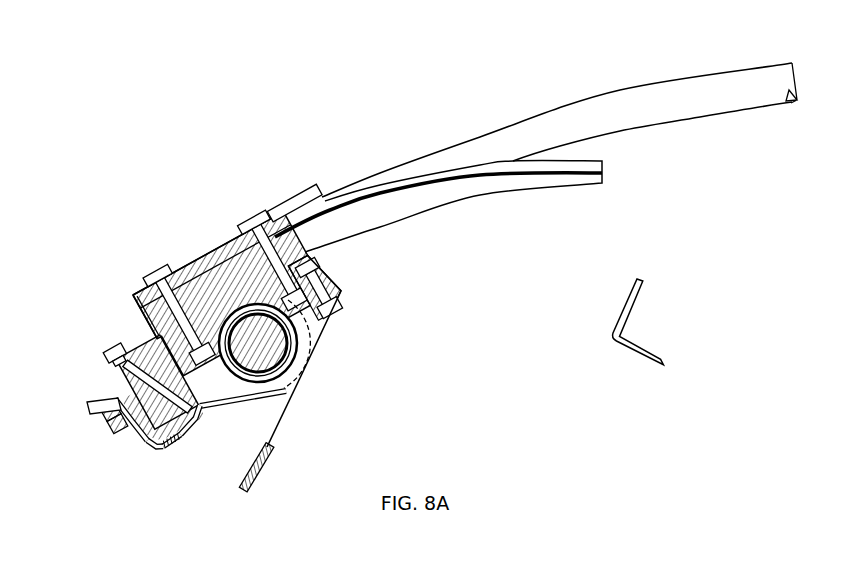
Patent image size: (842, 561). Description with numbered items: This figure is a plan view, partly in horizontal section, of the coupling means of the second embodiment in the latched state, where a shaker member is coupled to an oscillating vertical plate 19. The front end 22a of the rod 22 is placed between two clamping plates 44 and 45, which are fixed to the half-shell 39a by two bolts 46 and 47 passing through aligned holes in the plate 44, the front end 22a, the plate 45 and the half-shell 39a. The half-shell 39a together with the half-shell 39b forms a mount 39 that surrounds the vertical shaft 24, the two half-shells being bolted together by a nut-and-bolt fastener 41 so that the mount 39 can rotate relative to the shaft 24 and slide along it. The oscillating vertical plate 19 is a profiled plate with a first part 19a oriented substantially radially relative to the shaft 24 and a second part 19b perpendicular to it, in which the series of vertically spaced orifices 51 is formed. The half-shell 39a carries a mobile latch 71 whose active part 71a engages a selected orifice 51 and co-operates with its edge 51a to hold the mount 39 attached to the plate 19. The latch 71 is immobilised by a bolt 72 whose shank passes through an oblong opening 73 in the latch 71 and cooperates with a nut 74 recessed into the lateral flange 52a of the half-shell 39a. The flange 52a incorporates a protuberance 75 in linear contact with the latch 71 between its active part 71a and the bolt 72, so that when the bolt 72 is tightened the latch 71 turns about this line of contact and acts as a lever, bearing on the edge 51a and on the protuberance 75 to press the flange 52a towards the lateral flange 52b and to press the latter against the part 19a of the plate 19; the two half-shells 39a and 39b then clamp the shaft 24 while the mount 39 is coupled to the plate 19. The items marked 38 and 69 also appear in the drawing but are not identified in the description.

The rod 22 is at (708, 68).
The front end of rod 22a is at (146, 318).
The clamping plate 45 is at (338, 232).
The clamping plate 44 is at (200, 254).
The half-shell 39a is at (240, 231).
The bolt 46 is at (158, 272).
The bolt 47 is at (250, 224).
The nut-and-bolt fastener 41 is at (341, 316).
The mount 39 is at (315, 368).
The half-shell 39b is at (288, 388).
The bracket arm 38 is at (278, 426).
The vertical shaft 24 is at (289, 388).
The oscillating vertical plate 19 is at (266, 478).
The first part of oscillating vertical plate 19a is at (182, 436).
The second part of oscillating vertical plate 19b is at (157, 447).
The lateral flange 52a is at (146, 442).
The lateral flange 52b is at (204, 412).
The orifices 51 is at (130, 437).
The edge of orifice 51a is at (118, 430).
The mobile latch 71 is at (118, 373).
The active part of latch 71a is at (100, 412).
The bolt 72 is at (122, 343).
The oblong opening 73 is at (104, 368).
The nut 74 is at (186, 388).
The protuberance 75 is at (102, 389).
The hex key 69 is at (641, 300).